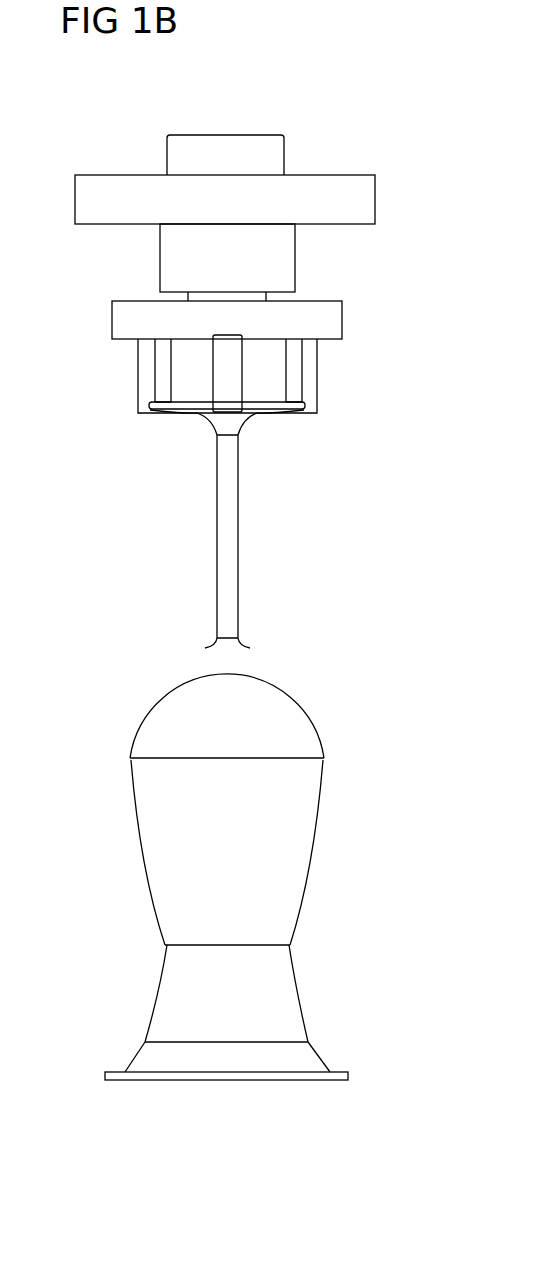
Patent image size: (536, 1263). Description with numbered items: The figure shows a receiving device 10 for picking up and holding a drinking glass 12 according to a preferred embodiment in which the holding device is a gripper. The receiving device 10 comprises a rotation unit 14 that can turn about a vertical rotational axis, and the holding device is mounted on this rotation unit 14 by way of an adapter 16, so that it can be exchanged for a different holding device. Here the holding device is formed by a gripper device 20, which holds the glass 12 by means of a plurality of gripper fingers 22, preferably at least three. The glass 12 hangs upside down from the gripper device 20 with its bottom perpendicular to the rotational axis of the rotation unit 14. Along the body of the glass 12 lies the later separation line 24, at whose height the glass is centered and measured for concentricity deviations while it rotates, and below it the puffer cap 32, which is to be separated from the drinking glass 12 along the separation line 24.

The receiving device 10 is at (351, 118).
The drinking glass 12 is at (298, 708).
The rotation unit 14 is at (370, 192).
The adapter 16 is at (286, 276).
The gripper device 20 is at (335, 318).
The gripper fingers 22 is at (143, 370).
The separation line 24 is at (292, 945).
The puffer cap 32 is at (285, 1018).